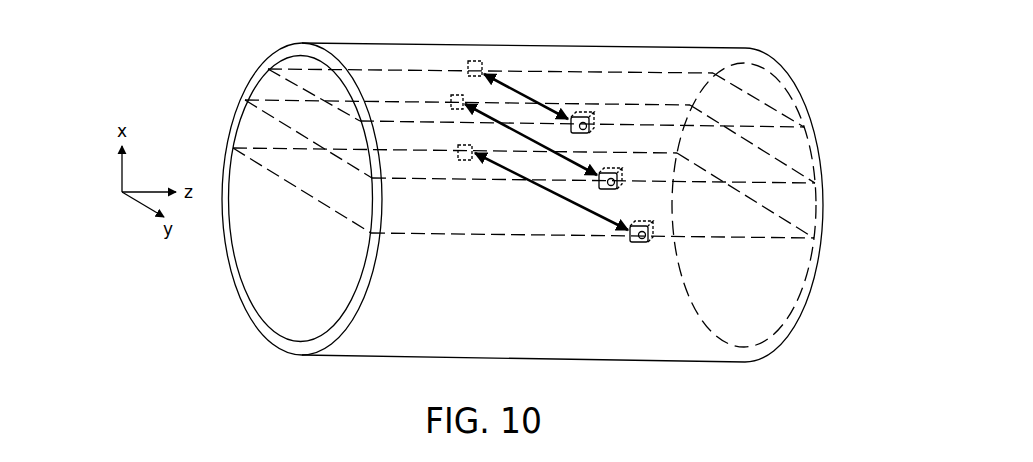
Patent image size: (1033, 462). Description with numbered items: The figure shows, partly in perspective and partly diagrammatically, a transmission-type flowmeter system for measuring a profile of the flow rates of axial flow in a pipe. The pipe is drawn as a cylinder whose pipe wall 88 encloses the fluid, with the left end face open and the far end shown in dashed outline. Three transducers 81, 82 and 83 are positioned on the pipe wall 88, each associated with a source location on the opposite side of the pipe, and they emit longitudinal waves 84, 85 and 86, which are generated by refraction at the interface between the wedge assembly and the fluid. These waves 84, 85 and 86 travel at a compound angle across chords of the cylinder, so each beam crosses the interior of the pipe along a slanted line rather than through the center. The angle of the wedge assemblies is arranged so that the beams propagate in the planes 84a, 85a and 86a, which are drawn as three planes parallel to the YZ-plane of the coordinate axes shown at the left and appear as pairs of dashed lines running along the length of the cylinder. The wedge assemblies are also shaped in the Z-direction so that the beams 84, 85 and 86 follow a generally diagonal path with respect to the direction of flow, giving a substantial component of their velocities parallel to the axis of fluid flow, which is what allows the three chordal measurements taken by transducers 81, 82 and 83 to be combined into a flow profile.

The transducer 81 is at (591, 131).
The transducer 82 is at (619, 189).
The transducer 83 is at (650, 243).
The longitudinal wave 84 is at (525, 96).
The longitudinal wave 85 is at (525, 143).
The longitudinal wave 86 is at (550, 194).
The plane 84a is at (768, 118).
The plane 85a is at (784, 175).
The plane 86a is at (776, 230).
The pipe wall 88 is at (305, 358).